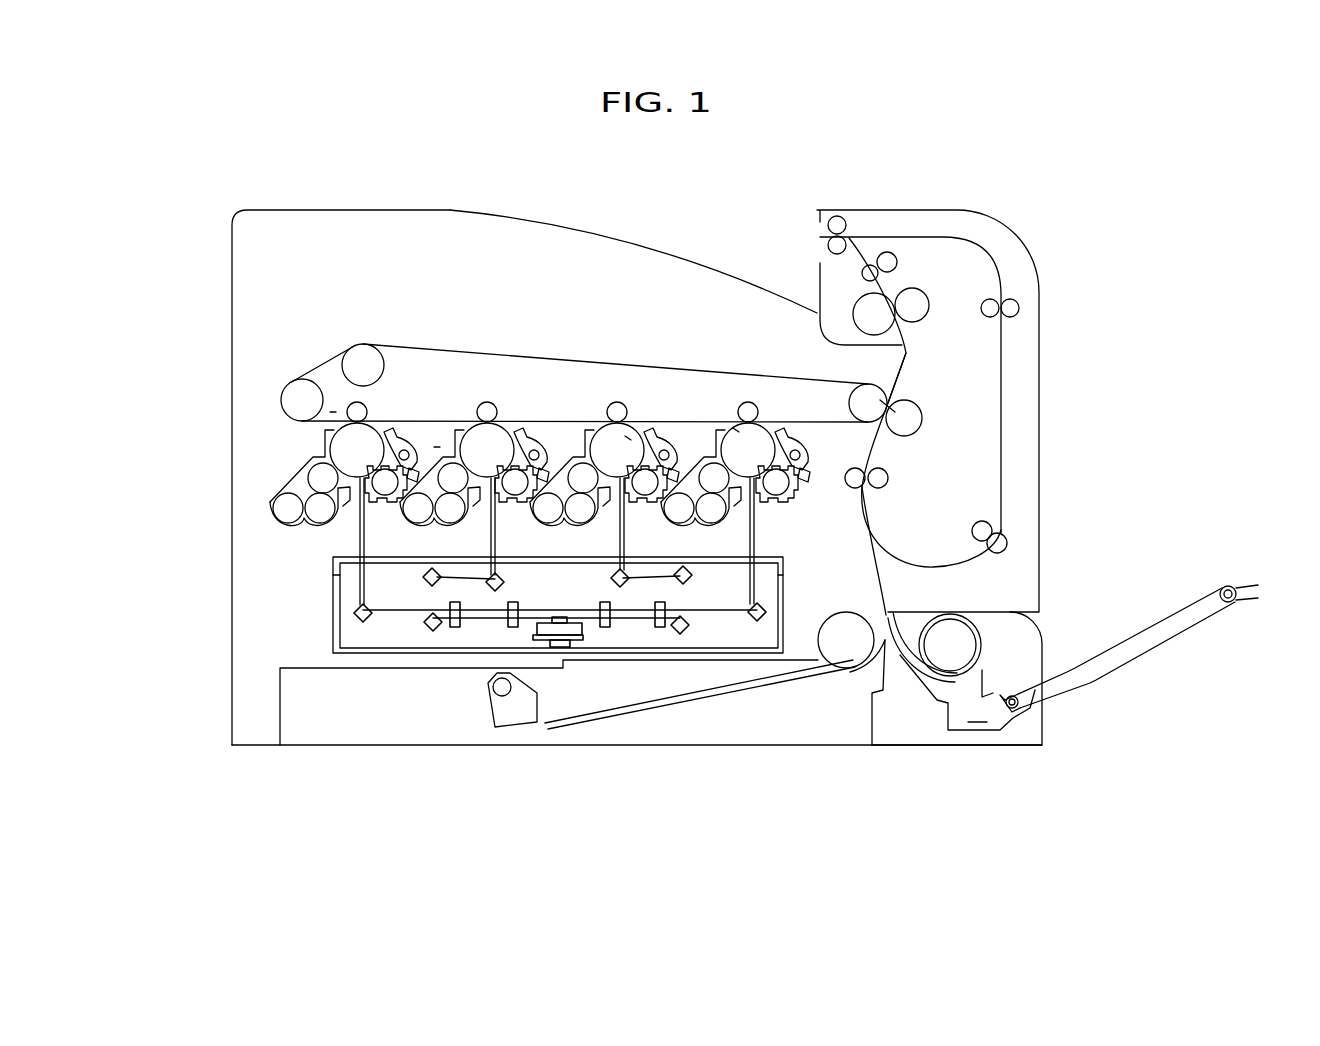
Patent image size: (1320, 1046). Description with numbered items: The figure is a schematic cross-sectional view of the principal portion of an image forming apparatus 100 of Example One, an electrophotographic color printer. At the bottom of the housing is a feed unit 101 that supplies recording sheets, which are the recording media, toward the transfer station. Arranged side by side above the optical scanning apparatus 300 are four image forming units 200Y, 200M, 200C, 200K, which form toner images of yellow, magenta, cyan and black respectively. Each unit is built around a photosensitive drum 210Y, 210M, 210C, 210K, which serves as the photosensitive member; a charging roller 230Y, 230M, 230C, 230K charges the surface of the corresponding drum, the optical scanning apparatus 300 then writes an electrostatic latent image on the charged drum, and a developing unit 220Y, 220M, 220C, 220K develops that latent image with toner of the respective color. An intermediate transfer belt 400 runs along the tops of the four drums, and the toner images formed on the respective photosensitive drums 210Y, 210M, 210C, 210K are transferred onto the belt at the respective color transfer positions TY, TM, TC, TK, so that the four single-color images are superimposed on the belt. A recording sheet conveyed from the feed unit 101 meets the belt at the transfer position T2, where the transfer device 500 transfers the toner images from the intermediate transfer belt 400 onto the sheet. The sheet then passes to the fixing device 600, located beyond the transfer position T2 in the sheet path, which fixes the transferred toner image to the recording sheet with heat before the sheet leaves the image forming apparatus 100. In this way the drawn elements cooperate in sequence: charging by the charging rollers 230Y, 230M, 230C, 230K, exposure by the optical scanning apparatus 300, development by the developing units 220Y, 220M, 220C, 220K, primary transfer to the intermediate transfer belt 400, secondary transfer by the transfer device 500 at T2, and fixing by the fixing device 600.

The image forming apparatus 100 is at (1075, 505).
The feed unit 101 is at (890, 723).
The image forming unit 200Y is at (348, 450).
The image forming unit 200M is at (497, 440).
The image forming unit 200C is at (570, 444).
The image forming unit 200K is at (702, 432).
The photosensitive drum 210Y is at (347, 450).
The photosensitive drum 210M is at (498, 420).
The photosensitive drum 210C is at (633, 420).
The photosensitive drum 210K is at (727, 420).
The developing unit 220Y is at (320, 482).
The developing unit 220M is at (451, 512).
The developing unit 220C is at (578, 512).
The developing unit 220K is at (712, 512).
The charging roller 230Y is at (387, 482).
The charging roller 230M is at (518, 490).
The charging roller 230C is at (647, 490).
The charging roller 230K is at (778, 490).
The optical scanning apparatus 300 is at (397, 638).
The intermediate transfer belt 400 is at (750, 370).
The transfer device 500 is at (912, 388).
The fixing device 600 is at (917, 299).
The transfer position TY is at (333, 410).
The transfer position TM is at (438, 446).
The transfer position TC is at (628, 438).
The transfer position TK is at (735, 430).
The transfer position T2 is at (890, 408).